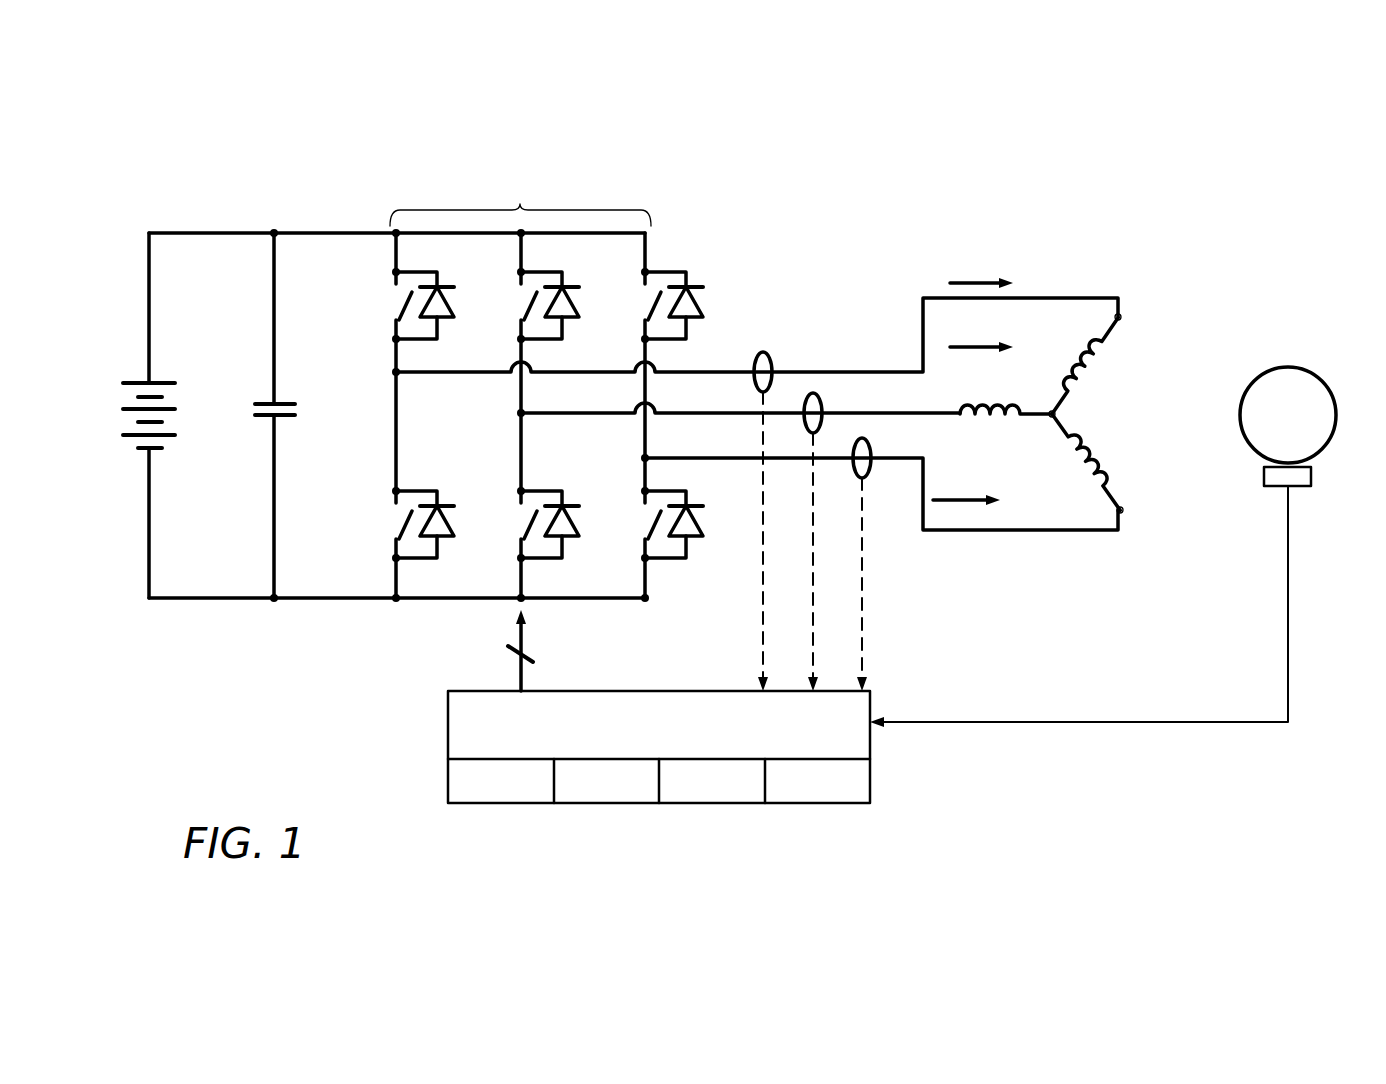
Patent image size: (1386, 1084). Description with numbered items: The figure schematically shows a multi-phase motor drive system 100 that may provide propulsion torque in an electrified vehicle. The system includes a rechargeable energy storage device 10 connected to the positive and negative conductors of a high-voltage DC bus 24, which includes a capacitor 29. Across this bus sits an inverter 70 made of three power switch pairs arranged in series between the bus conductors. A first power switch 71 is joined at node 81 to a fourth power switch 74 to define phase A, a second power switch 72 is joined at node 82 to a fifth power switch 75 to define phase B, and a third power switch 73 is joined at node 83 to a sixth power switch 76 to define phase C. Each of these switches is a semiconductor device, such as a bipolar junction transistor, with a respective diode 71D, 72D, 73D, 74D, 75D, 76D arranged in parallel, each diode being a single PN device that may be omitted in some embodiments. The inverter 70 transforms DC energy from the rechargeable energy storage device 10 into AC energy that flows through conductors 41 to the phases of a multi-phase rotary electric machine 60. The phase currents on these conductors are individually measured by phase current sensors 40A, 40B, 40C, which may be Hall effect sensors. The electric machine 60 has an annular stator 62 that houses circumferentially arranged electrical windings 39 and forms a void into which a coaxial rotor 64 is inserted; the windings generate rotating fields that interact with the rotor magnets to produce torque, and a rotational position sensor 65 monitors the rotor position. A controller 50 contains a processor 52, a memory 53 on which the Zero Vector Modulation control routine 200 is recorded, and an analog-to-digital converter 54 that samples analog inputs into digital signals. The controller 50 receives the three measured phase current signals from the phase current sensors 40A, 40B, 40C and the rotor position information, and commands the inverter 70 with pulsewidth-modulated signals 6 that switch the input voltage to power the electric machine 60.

The multi-phase motor drive system 100 is at (262, 190).
The rechargeable energy storage device 10 is at (72, 410).
The high-voltage DC bus 24 is at (128, 552).
The capacitor 29 is at (265, 445).
The inverter 70 is at (520, 205).
The first power switch 71 is at (372, 304).
The diode 71D is at (390, 305).
The second power switch 72 is at (499, 304).
The diode 72D is at (520, 305).
The third power switch 73 is at (623, 304).
The diode 73D is at (644, 305).
The fourth power switch 74 is at (371, 517).
The diode 74D is at (390, 524).
The fifth power switch 75 is at (499, 523).
The diode 75D is at (520, 524).
The sixth power switch 76 is at (623, 523).
The diode 76D is at (644, 524).
The node 81 is at (394, 372).
The node 82 is at (519, 413).
The node 83 is at (643, 458).
The conductors 41 is at (800, 290).
The phase current sensor 40A is at (763, 352).
The phase current sensor 40B is at (813, 393).
The phase current sensor 40C is at (862, 438).
The multi-phase rotary electric machine 60 is at (1055, 272).
The stator 62 is at (1122, 302).
The electrical windings 39 is at (1103, 480).
The rotor 64 is at (1290, 367).
The rotational position sensor 65 is at (1264, 476).
The controller 50 is at (702, 747).
The PWM signals 6 is at (501, 650).
The Zero Vector Modulation control routine 200 is at (515, 781).
The processor 52 is at (605, 803).
The memory 53 is at (712, 803).
The analog-to-digital converter 54 is at (808, 803).